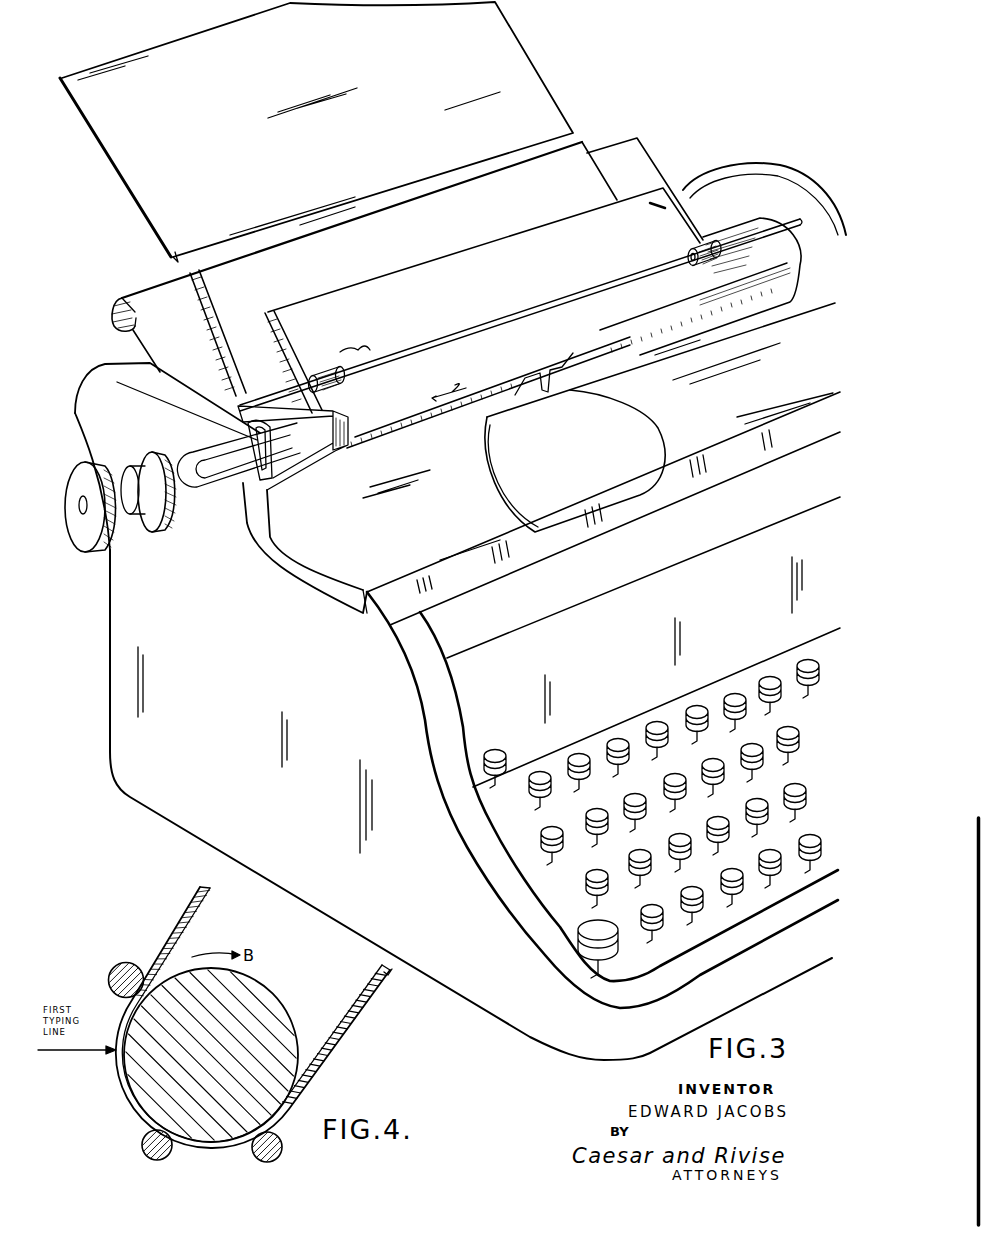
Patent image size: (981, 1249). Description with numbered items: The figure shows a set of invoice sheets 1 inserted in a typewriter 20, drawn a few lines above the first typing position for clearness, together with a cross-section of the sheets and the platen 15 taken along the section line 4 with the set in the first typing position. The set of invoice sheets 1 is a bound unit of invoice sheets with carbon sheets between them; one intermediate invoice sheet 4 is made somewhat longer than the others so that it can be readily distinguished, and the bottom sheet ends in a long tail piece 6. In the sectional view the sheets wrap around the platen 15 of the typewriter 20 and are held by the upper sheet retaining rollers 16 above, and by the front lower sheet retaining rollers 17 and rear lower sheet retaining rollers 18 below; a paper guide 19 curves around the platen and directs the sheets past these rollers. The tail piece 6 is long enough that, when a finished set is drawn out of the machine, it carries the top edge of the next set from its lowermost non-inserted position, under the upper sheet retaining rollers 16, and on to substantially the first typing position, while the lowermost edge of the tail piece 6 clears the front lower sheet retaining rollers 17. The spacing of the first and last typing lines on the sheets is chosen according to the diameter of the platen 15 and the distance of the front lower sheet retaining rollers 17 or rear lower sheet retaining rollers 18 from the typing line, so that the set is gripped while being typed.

In FIG. 3, the set of invoice sheets 1 is at (520, 240).
In FIG. 3, the intermediate invoice sheet 4 is at (290, 340).
In FIG. 3, the tail piece 6 is at (132, 150).
In FIG. 4, the platen 15 is at (270, 1015).
In FIG. 3, the upper sheet retaining rollers 16 is at (708, 266).
In FIG. 4, the upper sheet retaining rollers 16 is at (136, 962).
In FIG. 4, the front lower sheet retaining rollers 17 is at (157, 1161).
In FIG. 4, the rear lower sheet retaining rollers 18 is at (274, 1160).
In FIG. 3, the paper guide 19 is at (113, 312).
In FIG. 4, the paper guide 19 is at (345, 1040).
In FIG. 3, the typewriter 20 is at (118, 624).